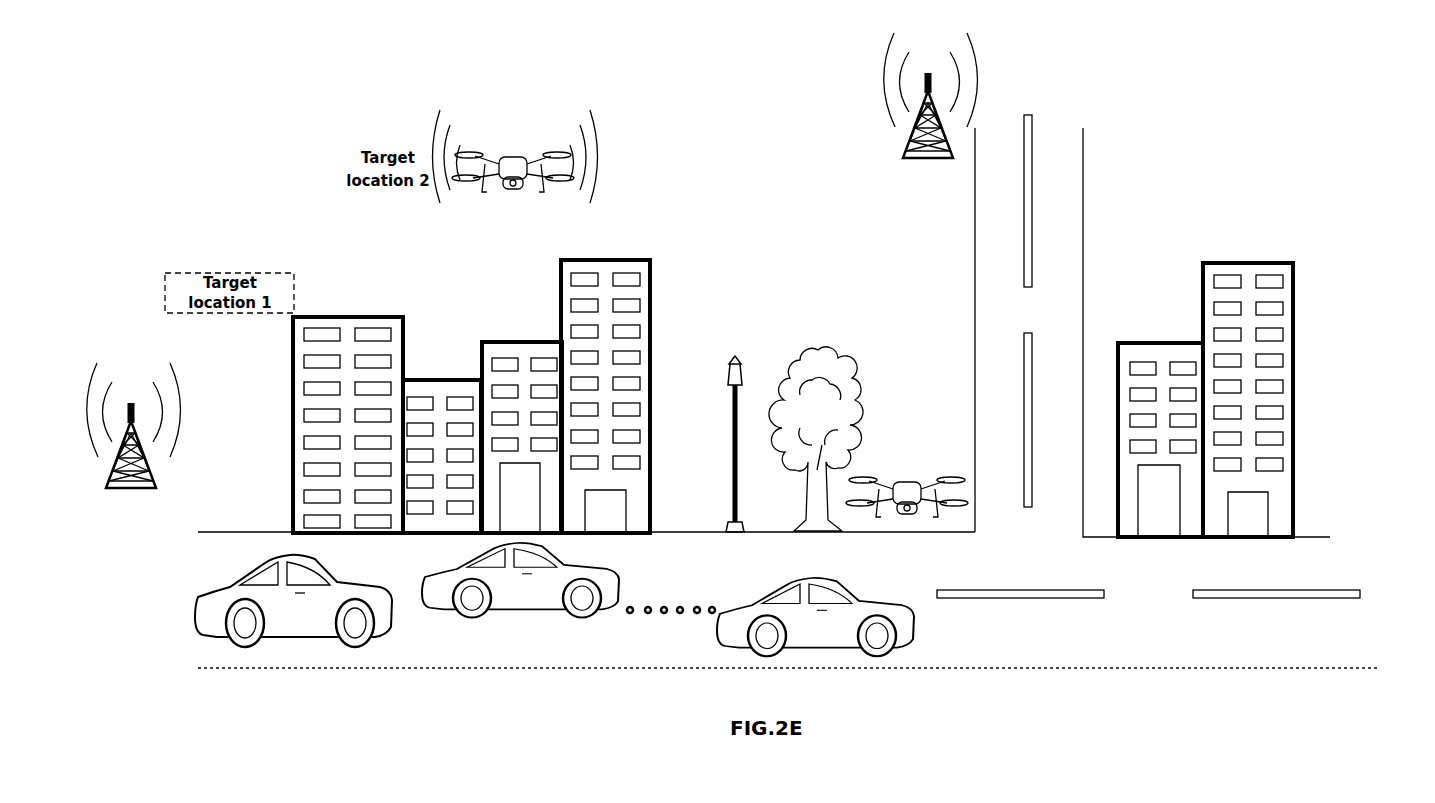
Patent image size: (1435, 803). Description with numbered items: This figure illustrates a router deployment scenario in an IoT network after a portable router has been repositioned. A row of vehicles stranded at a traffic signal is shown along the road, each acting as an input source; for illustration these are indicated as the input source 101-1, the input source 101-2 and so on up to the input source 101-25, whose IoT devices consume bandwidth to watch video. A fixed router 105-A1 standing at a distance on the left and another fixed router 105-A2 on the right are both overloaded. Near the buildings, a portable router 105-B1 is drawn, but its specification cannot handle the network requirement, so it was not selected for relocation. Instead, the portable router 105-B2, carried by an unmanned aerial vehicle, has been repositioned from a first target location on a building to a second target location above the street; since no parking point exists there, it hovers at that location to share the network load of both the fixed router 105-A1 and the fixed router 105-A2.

The fixed router 105-A1 is at (134, 441).
The fixed router 105-A2 is at (931, 112).
The portable router 105-B1 is at (903, 478).
The portable router 105-B2 is at (516, 152).
The input source 101-1 is at (293, 601).
The input source 101-2 is at (520, 580).
The input source 101-25 is at (815, 617).